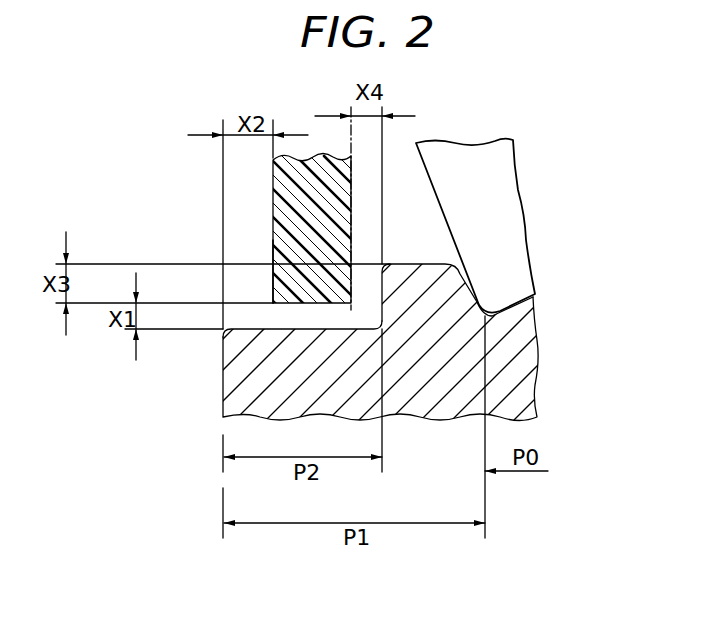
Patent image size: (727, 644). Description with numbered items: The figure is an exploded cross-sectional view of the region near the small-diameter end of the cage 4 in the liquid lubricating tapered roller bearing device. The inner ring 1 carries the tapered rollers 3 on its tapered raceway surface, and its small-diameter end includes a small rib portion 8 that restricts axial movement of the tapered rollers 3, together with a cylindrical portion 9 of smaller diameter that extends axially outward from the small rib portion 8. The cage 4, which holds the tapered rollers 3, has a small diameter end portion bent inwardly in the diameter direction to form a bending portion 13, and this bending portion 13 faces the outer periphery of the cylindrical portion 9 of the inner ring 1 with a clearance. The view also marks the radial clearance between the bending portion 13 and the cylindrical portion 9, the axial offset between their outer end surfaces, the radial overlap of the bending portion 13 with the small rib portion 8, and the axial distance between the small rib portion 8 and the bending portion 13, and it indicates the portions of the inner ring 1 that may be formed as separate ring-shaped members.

The inner ring 1 is at (237, 392).
The tapered rollers 3 is at (513, 205).
The cage 4 is at (330, 172).
The small rib portion 8 is at (420, 296).
The cylindrical portion 9 is at (247, 345).
The bending portion 13 is at (298, 248).